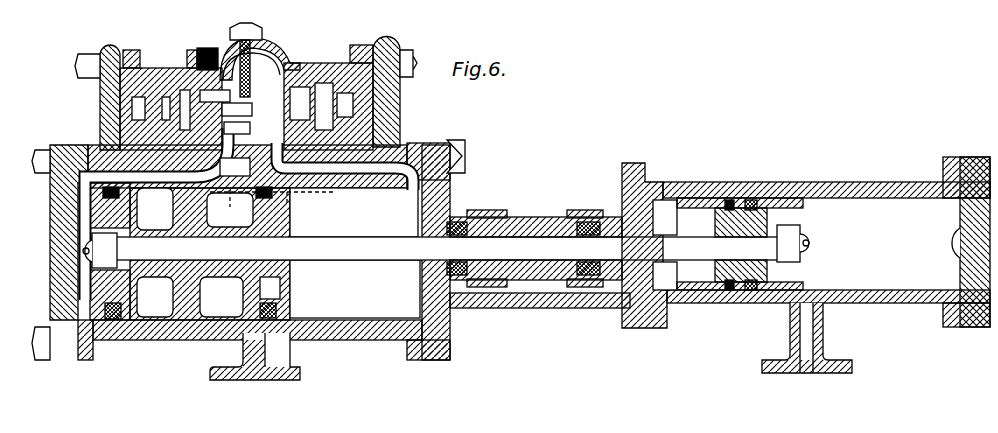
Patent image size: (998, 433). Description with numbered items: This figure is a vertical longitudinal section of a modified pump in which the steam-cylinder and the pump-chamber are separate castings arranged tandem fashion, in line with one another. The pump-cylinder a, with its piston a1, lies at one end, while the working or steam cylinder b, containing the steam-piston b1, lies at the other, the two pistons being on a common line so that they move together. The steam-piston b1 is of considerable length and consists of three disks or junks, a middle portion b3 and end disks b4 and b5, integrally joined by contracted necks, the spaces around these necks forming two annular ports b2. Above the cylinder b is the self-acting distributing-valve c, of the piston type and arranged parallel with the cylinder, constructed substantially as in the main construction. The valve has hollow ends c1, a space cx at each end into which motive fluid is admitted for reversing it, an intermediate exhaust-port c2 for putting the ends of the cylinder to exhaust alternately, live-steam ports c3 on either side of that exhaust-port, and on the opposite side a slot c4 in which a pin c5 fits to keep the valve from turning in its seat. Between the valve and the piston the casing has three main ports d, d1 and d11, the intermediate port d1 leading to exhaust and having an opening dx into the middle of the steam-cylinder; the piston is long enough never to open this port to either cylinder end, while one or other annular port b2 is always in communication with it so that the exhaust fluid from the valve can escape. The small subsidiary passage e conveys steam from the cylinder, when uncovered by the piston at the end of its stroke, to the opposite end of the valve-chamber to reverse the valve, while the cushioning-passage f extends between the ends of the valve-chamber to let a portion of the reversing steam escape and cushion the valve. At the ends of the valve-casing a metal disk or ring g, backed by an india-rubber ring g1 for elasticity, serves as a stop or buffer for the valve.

The pump-cylinder a is at (806, 265).
The pump piston a1 is at (792, 185).
The working or steam cylinder b is at (250, 251).
The steam-piston b1 is at (176, 240).
The annular ports b2 is at (190, 297).
The middle disk of piston b3 is at (190, 340).
The end disk of piston b4 is at (128, 340).
The end disk of piston b5 is at (283, 335).
The distributing-valve c is at (285, 72).
The hollow ends of valve c1 is at (205, 48).
The intermediate exhaust port of valve c2 is at (237, 127).
The live-steam ports c3 is at (237, 108).
The slot c4 is at (215, 92).
The pin c5 is at (235, 167).
The end spaces of valve cx is at (172, 85).
The main port d is at (165, 184).
The intermediate port d1 is at (178, 209).
The main port d11 is at (230, 210).
The opening dx is at (345, 166).
The subsidiary passage e is at (271, 202).
The cushioning-passage f is at (538, 259).
The metal disk or ring g is at (152, 72).
The india-rubber ring g1 is at (130, 108).